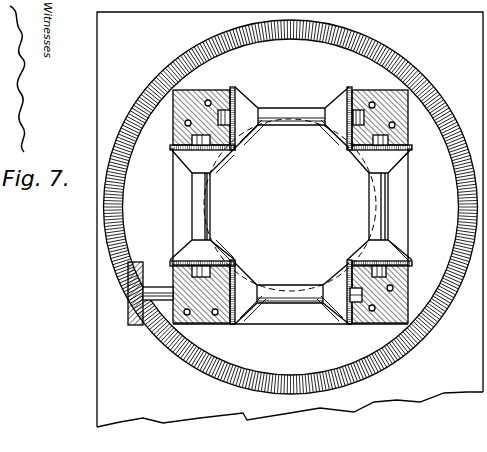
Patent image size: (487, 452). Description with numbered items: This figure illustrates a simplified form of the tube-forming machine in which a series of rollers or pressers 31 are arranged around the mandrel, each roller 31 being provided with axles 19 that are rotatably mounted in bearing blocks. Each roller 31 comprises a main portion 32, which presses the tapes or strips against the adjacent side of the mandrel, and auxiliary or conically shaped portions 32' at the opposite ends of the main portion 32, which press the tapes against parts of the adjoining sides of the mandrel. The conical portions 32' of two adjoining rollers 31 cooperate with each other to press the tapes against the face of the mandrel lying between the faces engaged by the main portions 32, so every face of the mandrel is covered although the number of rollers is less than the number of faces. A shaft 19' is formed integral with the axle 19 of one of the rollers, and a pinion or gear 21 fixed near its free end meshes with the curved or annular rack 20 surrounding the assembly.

The curved or annular rack 20 is at (398, 361).
The pinion or gear 21 is at (131, 326).
The axle 19 is at (350, 325).
The shaft 19' is at (158, 269).
The roller or presser 31 is at (275, 110).
The main portion 32 is at (292, 224).
The auxiliary or conically shaped portion 32' is at (291, 206).